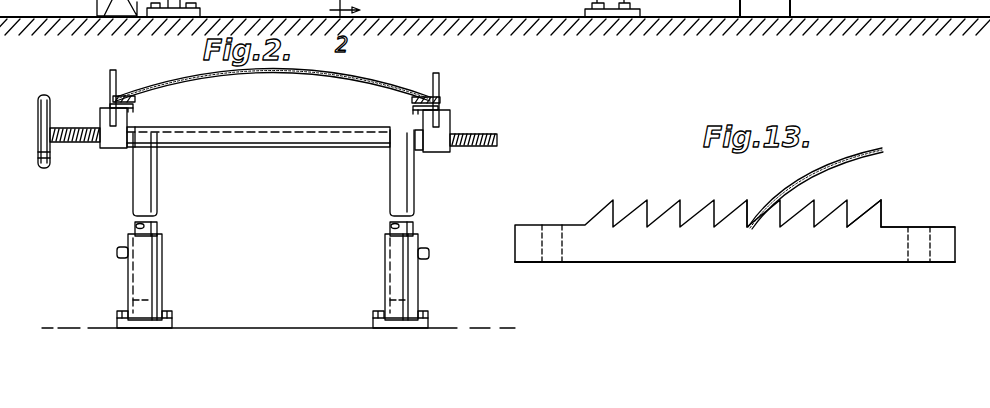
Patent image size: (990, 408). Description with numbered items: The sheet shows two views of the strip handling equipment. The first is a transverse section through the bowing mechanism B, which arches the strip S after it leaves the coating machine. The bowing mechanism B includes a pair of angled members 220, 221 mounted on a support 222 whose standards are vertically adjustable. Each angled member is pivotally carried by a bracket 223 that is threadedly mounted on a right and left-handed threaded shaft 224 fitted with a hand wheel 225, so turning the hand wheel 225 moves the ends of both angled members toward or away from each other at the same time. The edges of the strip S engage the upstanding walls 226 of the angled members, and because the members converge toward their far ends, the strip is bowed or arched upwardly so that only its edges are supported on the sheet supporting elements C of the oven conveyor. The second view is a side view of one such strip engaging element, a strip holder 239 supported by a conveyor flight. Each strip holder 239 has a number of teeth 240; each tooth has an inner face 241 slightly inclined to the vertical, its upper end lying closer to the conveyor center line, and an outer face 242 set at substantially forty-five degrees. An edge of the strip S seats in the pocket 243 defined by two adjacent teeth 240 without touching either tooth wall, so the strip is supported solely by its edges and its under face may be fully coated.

In FIG. 2, the angled member 220 is at (117, 99).
In FIG. 2, the angled member 221 is at (440, 99).
In FIG. 2, the support 222 is at (261, 146).
In FIG. 2, the bracket 223 is at (445, 121).
In FIG. 2, the threaded shaft 224 is at (465, 146).
In FIG. 2, the hand wheel 225 is at (43, 168).
In FIG. 2, the upstanding wall 226 is at (117, 87).
In FIG. 2, the strip S is at (270, 72).
In FIG. 13, the strip S is at (812, 170).
In FIG. 2, the bowing mechanism B is at (452, 87).
In FIG. 13, the sheet supporting element C is at (688, 270).
In FIG. 13, the strip holder 239 is at (782, 250).
In FIG. 13, the tooth 240 is at (896, 201).
In FIG. 13, the inner face 241 is at (887, 217).
In FIG. 13, the outer face 242 is at (874, 212).
In FIG. 13, the pocket 243 is at (752, 212).